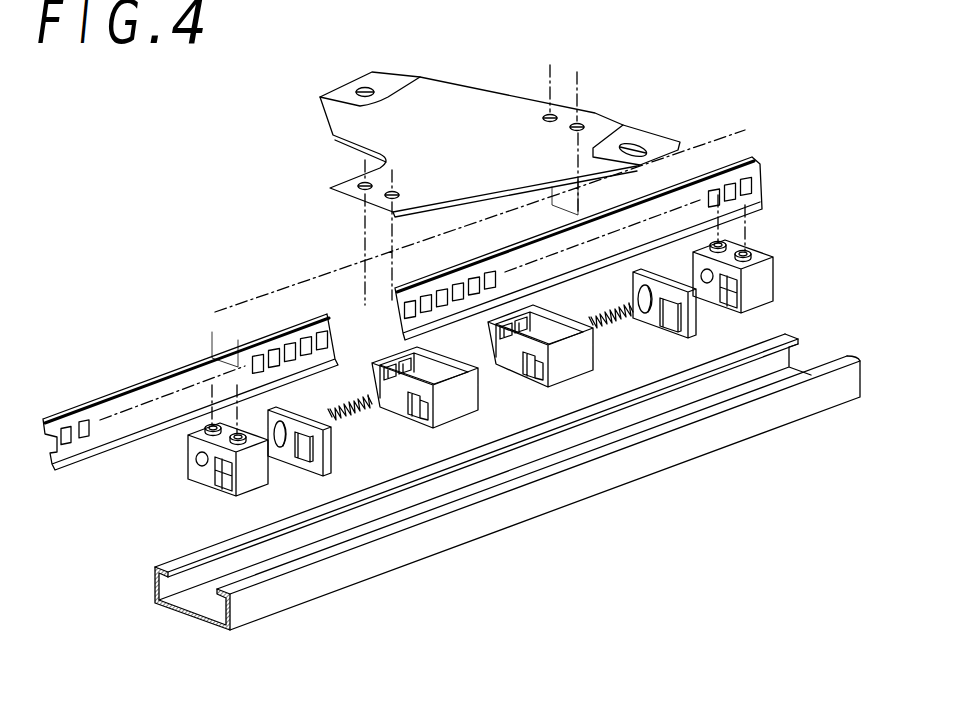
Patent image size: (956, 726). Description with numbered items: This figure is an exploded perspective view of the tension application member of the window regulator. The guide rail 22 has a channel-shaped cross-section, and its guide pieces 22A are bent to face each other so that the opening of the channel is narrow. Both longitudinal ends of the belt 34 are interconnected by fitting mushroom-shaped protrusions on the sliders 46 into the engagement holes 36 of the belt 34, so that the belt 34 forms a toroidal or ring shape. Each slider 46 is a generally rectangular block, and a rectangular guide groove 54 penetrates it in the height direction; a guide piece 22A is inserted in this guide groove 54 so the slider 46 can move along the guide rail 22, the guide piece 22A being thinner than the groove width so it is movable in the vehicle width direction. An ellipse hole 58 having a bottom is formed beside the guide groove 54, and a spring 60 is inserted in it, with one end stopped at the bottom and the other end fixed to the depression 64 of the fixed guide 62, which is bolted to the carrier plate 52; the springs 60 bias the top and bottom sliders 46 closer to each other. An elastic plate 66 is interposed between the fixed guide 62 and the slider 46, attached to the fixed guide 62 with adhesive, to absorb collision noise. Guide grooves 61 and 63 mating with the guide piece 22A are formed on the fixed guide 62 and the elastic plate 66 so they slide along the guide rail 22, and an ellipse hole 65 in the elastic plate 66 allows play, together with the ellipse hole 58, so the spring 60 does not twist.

The guide rail 22 is at (475, 515).
The guide pieces 22A is at (160, 600).
The belt 34 is at (441, 291).
The engagement holes 36 is at (754, 208).
The sliders 46 is at (473, 383).
The carrier plate 52 is at (471, 104).
The guide groove 54 is at (525, 366).
The ellipse hole 58 is at (480, 369).
The spring 60 is at (611, 320).
The guide groove 61 is at (737, 312).
The fixed guide 62 is at (465, 372).
The guide groove 63 is at (652, 328).
The depression 64 is at (699, 282).
The ellipse hole 65 is at (633, 292).
The elastic plate 66 is at (497, 391).